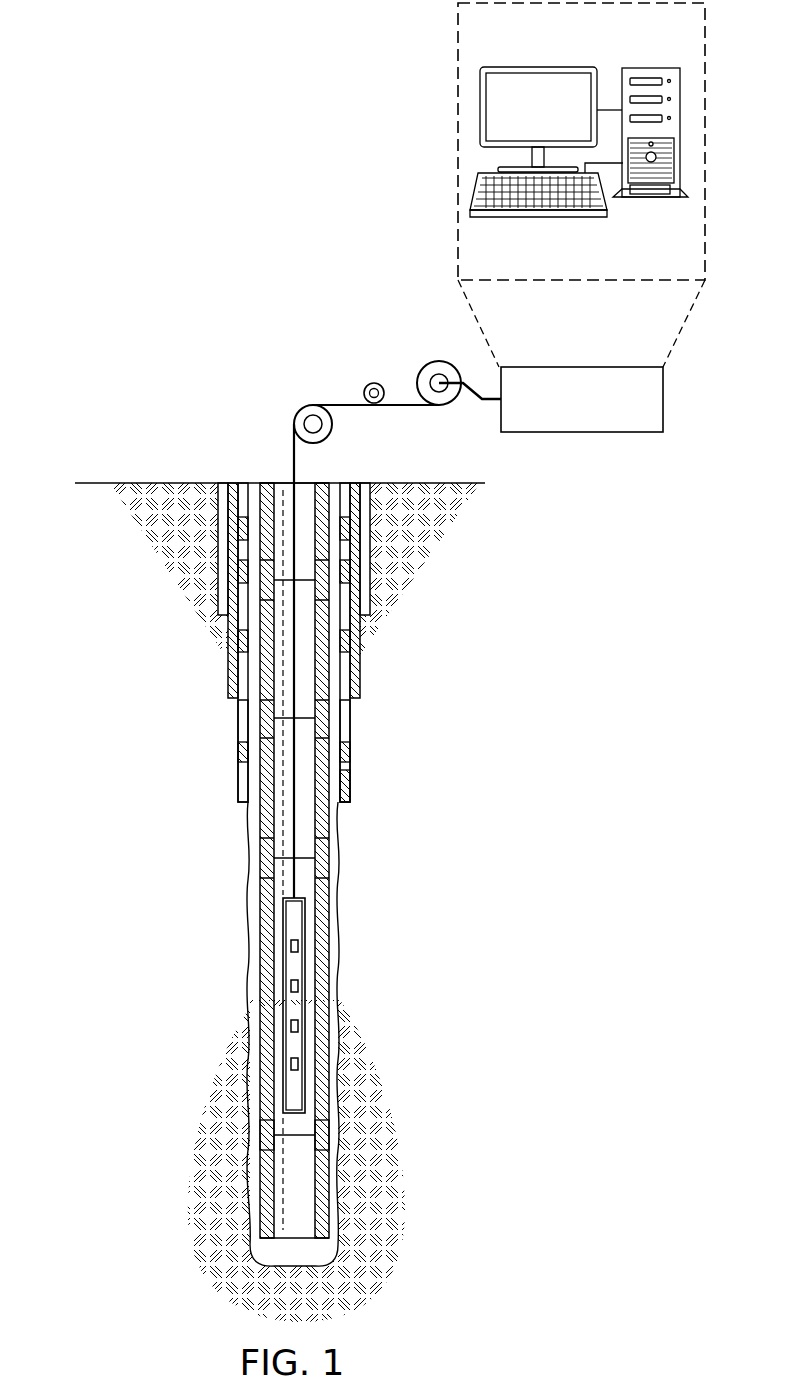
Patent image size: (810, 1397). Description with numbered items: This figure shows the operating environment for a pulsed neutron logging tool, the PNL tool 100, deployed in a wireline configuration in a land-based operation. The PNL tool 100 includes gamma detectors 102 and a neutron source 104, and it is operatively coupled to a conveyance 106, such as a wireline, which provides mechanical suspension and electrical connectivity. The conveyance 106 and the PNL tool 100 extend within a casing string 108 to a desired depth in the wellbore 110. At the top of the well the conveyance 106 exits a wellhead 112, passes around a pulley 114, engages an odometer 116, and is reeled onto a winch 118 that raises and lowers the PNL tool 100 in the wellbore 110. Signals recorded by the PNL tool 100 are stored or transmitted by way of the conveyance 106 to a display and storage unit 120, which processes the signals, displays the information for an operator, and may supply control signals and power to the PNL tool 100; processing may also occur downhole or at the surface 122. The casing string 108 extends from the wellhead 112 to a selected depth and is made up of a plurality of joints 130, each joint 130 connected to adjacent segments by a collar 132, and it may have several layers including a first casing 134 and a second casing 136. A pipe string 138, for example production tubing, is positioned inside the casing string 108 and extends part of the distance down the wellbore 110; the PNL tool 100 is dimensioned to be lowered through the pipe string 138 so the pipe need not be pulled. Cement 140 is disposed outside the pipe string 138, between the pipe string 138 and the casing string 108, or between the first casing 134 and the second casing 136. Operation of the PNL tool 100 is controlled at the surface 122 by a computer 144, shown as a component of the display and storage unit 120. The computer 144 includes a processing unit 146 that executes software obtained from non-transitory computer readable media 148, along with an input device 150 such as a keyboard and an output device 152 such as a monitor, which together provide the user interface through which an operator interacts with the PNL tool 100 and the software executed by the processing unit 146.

The PNL tool 100 is at (270, 1038).
The gamma detectors 102 is at (300, 982).
The neutron source 104 is at (291, 946).
The conveyance 106 is at (297, 472).
The casing string 108 is at (205, 680).
The wellbore 110 is at (338, 773).
The wellhead 112 is at (276, 474).
The pulley 114 is at (298, 410).
The odometer 116 is at (366, 386).
The winch 118 is at (423, 368).
The display and storage unit 120 is at (664, 406).
The surface 122 is at (160, 481).
The joints 130 is at (228, 708).
The collar 132 is at (240, 757).
The first casing 134 is at (343, 717).
The second casing 136 is at (355, 672).
The pipe string 138 is at (262, 1165).
The cement 140 is at (340, 893).
The computer 144 is at (718, 90).
The processing unit 146 is at (656, 204).
The non-transitory computer readable media 148 is at (652, 67).
The input device 150 is at (545, 218).
The output device 152 is at (540, 66).